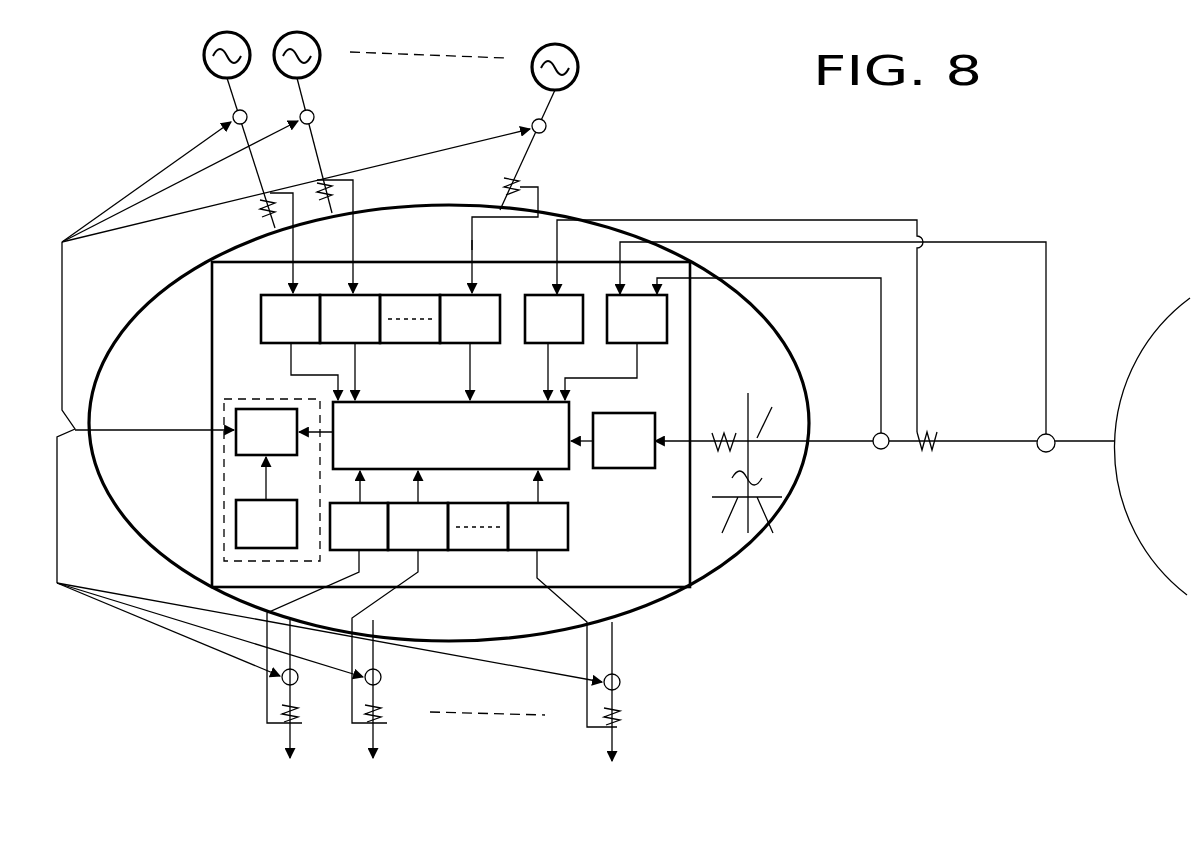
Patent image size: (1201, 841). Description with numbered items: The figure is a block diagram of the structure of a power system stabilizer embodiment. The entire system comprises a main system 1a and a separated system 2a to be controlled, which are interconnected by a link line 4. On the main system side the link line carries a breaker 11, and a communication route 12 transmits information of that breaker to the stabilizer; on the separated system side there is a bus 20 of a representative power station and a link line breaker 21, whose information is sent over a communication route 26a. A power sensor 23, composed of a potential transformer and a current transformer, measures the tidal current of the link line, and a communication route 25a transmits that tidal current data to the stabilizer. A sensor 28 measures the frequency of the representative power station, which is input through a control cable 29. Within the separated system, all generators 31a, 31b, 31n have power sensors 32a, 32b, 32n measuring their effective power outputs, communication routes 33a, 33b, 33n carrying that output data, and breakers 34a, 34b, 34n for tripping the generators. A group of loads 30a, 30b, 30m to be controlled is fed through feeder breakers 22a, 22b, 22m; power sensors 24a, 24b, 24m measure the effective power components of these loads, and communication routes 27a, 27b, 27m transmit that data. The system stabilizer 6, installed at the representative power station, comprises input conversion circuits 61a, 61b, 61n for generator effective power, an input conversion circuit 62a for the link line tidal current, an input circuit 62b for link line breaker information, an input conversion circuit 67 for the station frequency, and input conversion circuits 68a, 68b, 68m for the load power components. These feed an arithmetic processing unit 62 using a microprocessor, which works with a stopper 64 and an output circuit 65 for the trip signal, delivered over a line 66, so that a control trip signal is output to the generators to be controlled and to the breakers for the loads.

The main system 1a is at (1154, 334).
The separated system 2a is at (742, 576).
The link line 4 is at (1006, 440).
The system stabilizer 6 is at (691, 566).
The breaker 11 is at (1046, 452).
The communication route 12 is at (1002, 242).
The bus 20 is at (790, 437).
The link line breaker 21 is at (881, 449).
The power sensor 23 is at (926, 452).
The communication route 25a is at (856, 207).
The communication route 26a is at (880, 364).
The sensor 28 is at (722, 430).
The control cable 29 is at (703, 428).
The feeder breaker 22a is at (298, 682).
The feeder breaker 22b is at (381, 678).
The feeder breaker 22m is at (620, 684).
The power sensor 24a is at (301, 713).
The power sensor 24b is at (384, 714).
The power sensor 24m is at (622, 718).
The communication route 27a is at (301, 596).
The communication route 27b is at (386, 590).
The communication route 27m is at (560, 598).
The load 30a is at (286, 744).
The load 30b is at (380, 744).
The load 30m is at (616, 746).
The generator 31a is at (204, 64).
The generator 31b is at (320, 62).
The generator 31n is at (578, 72).
The power sensor 32a is at (266, 212).
The power sensor 32b is at (338, 196).
The power sensor 32n is at (518, 192).
The communication route 33a is at (286, 279).
The communication route 33b is at (356, 279).
The communication route 33n is at (472, 246).
The breaker 34a is at (234, 112).
The breaker 34b is at (316, 118).
The breaker 34n is at (548, 126).
The input conversion circuit 61a is at (290, 319).
The input conversion circuit 61b is at (350, 319).
The input conversion circuit 61n is at (470, 319).
The input conversion circuit 62a is at (554, 347).
The input circuit 62b is at (616, 347).
The arithmetic processing unit 62 is at (440, 388).
The stopper 64 is at (266, 502).
The output circuit 65 is at (284, 432).
The signal line 66 is at (176, 428).
The input conversion circuit 67 is at (613, 440).
The input conversion circuit 68a is at (359, 510).
The input conversion circuit 68b is at (418, 510).
The input conversion circuit 68m is at (538, 510).